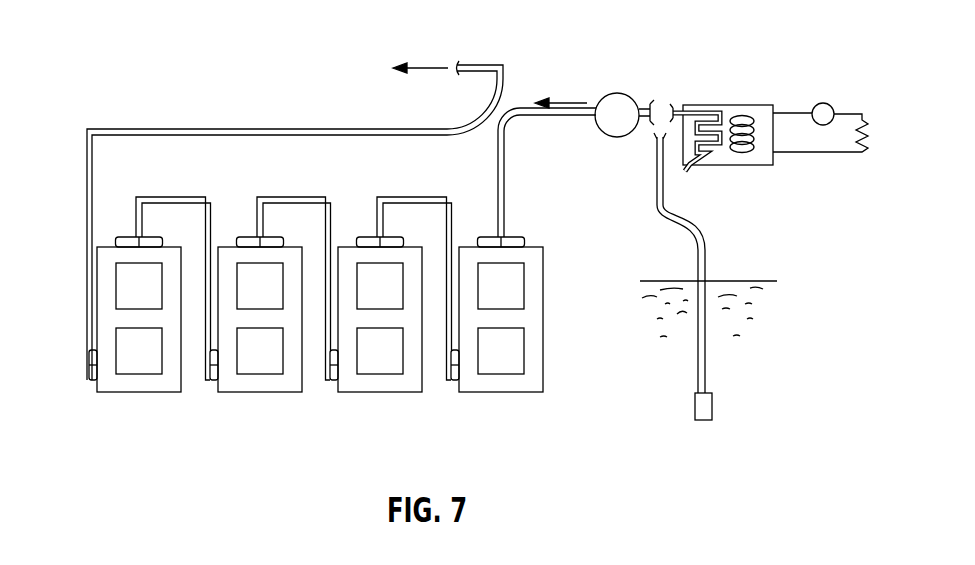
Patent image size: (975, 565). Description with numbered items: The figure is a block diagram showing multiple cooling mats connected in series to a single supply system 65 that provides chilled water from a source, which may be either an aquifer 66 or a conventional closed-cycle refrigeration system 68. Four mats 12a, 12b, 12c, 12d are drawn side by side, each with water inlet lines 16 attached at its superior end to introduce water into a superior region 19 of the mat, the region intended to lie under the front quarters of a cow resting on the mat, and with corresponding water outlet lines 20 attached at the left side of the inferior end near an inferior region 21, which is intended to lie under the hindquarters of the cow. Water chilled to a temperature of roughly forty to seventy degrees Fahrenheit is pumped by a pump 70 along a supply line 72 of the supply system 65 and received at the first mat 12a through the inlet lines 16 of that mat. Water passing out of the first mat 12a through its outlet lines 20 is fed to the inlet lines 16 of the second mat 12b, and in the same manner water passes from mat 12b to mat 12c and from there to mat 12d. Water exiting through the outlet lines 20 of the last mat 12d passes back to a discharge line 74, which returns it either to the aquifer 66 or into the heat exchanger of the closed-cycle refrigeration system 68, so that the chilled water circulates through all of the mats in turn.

The first mat 12a is at (509, 393).
The mat 12b is at (382, 393).
The mat 12c is at (262, 393).
The mat 12d is at (141, 393).
The water inlet lines 16 is at (127, 240).
The superior region 19 is at (128, 297).
The water outlet lines 20 is at (89, 381).
The inferior region 21 is at (128, 362).
The supply system 65 is at (648, 52).
The aquifer 66 is at (706, 248).
The closed-cycle refrigeration system 68 is at (727, 105).
The pump 70 is at (616, 138).
The supply conduit 72 is at (561, 116).
The discharge line 74 is at (486, 64).